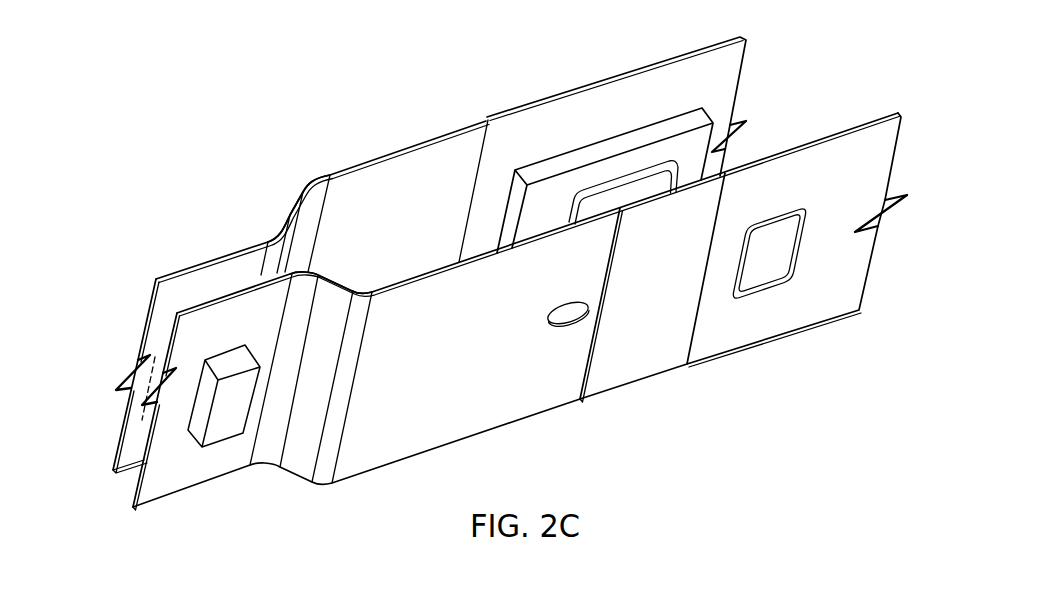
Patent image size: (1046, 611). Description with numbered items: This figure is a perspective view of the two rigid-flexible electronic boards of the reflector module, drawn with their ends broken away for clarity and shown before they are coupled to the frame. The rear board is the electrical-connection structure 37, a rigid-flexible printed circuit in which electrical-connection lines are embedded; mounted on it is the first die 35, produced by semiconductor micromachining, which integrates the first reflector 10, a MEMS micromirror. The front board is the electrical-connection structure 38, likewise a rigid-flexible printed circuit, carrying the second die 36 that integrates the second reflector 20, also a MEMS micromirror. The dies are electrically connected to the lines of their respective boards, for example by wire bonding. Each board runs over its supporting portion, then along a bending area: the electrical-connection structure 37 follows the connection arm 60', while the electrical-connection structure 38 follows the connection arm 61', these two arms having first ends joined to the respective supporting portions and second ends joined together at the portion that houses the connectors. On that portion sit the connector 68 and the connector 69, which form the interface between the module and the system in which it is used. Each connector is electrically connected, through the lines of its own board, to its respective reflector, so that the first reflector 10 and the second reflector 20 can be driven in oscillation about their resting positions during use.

The first reflector 10 is at (725, 155).
The second reflector 20 is at (788, 260).
The first die 35 is at (639, 138).
The second die 36 is at (771, 310).
The electrical-connection structure 37 is at (425, 143).
The electrical-connection structure 38 is at (425, 442).
The connection arm 60' is at (306, 170).
The connection arm 61' is at (328, 418).
The connector 68 is at (162, 349).
The connector 69 is at (222, 432).